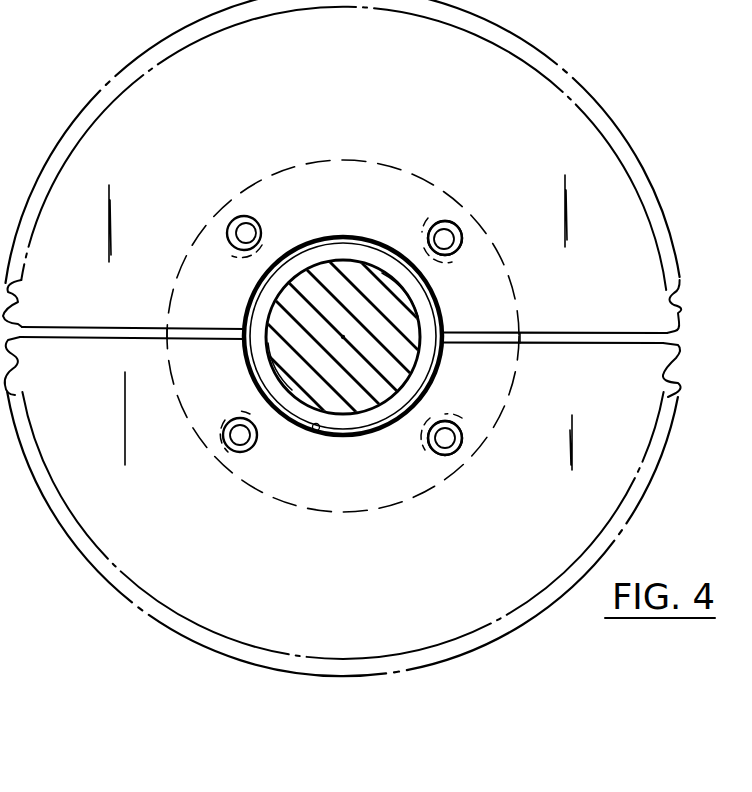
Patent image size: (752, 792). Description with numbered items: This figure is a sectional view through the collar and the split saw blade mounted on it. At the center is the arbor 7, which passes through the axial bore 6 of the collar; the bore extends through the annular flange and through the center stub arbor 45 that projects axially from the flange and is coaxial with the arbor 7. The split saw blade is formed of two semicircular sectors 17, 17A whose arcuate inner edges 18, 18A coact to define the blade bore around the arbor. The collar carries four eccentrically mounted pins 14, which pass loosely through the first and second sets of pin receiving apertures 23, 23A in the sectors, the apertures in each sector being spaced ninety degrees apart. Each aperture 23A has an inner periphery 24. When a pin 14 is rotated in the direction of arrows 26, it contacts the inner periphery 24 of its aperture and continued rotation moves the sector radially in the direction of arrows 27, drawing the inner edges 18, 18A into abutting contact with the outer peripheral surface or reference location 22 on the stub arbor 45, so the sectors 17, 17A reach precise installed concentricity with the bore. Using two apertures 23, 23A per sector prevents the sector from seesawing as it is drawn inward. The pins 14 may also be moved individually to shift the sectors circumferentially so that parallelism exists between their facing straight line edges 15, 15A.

The axial bore 6 is at (361, 408).
The arbor 7 is at (285, 362).
The pins 14 is at (236, 232).
The straight line edge 15 is at (86, 329).
The straight line edge 15A is at (63, 336).
The semicircular sector 17 is at (633, 226).
The semicircular sector 17A is at (633, 417).
The inner edge 18 is at (316, 244).
The inner edge 18A is at (315, 431).
The reference location 22 is at (359, 231).
The pin receiving apertures 23 is at (443, 221).
The pin receiving apertures 23A is at (430, 457).
The inner periphery 24 is at (461, 226).
The arrows 26 is at (465, 243).
The arrows 27 is at (462, 322).
The stub arbor 45 is at (426, 381).